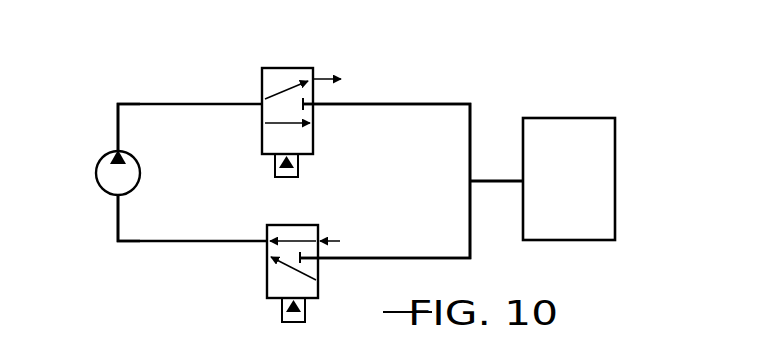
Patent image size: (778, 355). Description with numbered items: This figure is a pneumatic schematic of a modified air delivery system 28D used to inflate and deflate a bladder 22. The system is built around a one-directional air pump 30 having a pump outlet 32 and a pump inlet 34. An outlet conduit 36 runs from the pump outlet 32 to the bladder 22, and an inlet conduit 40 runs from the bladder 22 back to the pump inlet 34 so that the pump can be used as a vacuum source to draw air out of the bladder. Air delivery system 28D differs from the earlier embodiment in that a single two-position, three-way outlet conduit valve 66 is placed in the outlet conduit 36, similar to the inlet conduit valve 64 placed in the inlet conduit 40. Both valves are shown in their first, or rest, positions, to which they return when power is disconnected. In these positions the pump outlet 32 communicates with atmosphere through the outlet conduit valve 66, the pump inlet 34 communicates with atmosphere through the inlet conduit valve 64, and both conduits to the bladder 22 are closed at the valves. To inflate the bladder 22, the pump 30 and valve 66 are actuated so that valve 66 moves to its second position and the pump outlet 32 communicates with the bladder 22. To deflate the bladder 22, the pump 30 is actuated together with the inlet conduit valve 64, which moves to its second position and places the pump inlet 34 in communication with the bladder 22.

The bladder 22 is at (553, 118).
The air delivery system 28D is at (186, 82).
The air pump 30 is at (95, 173).
The pump outlet 32 is at (116, 121).
The pump inlet 34 is at (118, 221).
The outlet conduit 36 is at (375, 106).
The inlet conduit 40 is at (454, 260).
The inlet conduit valve 64 is at (302, 225).
The outlet conduit valve 66 is at (286, 68).